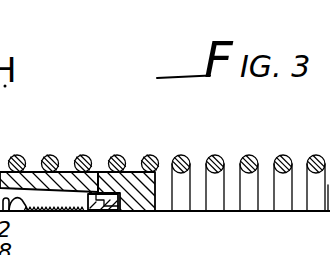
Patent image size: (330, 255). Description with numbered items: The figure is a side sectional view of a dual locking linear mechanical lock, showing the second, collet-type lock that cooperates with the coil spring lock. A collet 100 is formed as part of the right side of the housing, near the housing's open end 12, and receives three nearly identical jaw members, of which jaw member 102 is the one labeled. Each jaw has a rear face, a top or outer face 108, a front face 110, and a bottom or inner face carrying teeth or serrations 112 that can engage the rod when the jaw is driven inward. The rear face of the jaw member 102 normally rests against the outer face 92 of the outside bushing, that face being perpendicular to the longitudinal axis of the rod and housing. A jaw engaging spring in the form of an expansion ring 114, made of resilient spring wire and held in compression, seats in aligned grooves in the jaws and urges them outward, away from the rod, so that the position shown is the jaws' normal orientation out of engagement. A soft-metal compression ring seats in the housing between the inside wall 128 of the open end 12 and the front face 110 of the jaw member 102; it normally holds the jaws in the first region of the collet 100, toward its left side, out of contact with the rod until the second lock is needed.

The open end 12 is at (157, 211).
The outer face of bushing 92 is at (19, 148).
The collet 100 is at (63, 174).
The jaw member 102 is at (77, 172).
The top or outer face 108 is at (28, 186).
The front face 110 is at (100, 172).
The teeth or serrations 112 is at (80, 212).
The expansion ring 114 is at (23, 208).
The inside wall 128 is at (122, 241).